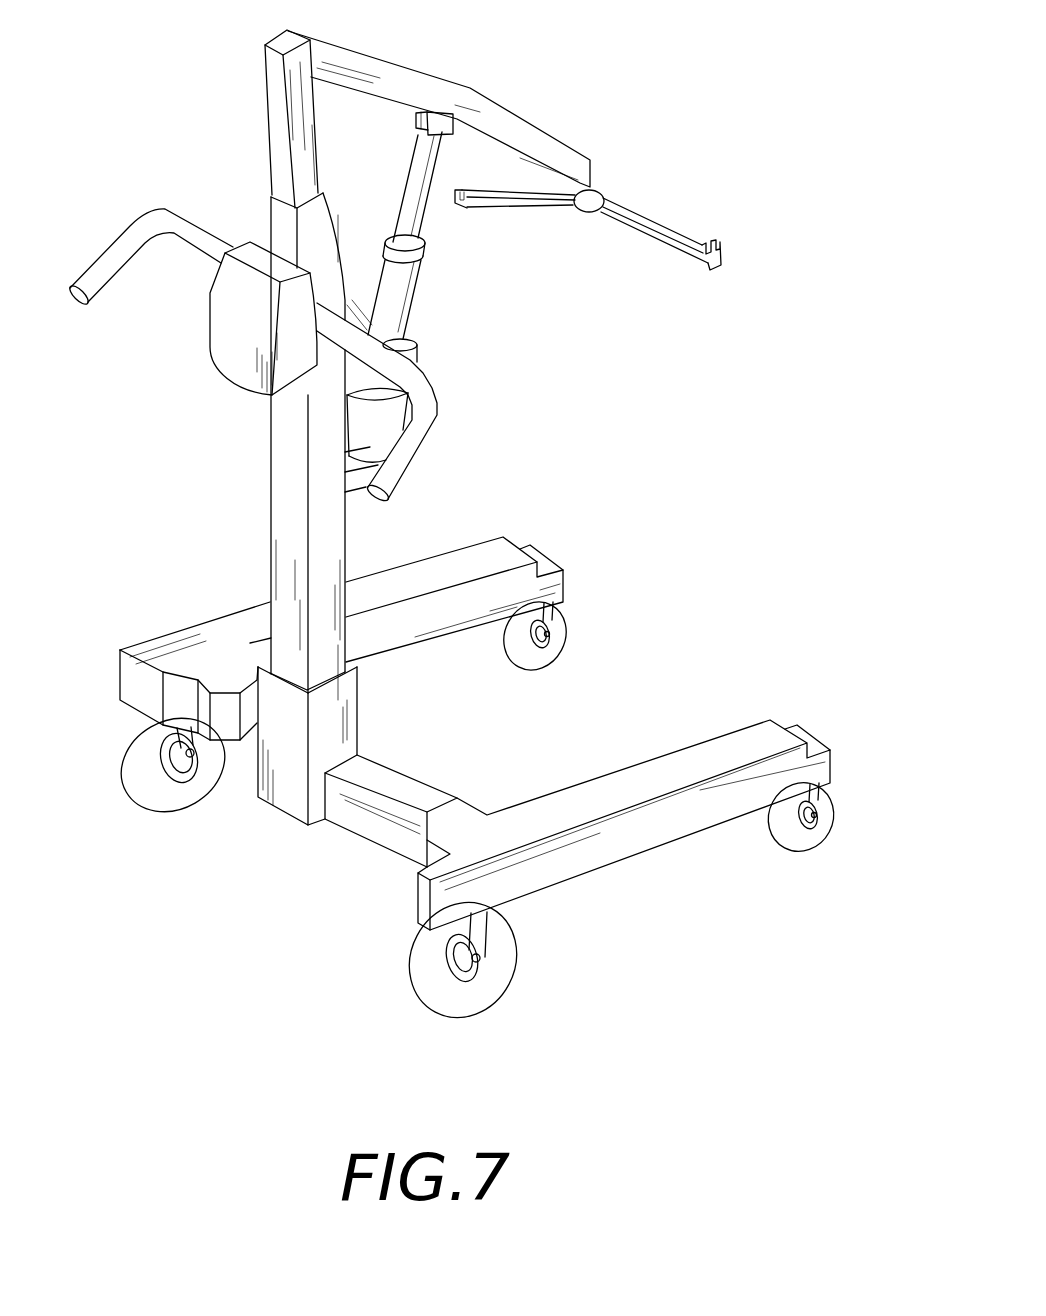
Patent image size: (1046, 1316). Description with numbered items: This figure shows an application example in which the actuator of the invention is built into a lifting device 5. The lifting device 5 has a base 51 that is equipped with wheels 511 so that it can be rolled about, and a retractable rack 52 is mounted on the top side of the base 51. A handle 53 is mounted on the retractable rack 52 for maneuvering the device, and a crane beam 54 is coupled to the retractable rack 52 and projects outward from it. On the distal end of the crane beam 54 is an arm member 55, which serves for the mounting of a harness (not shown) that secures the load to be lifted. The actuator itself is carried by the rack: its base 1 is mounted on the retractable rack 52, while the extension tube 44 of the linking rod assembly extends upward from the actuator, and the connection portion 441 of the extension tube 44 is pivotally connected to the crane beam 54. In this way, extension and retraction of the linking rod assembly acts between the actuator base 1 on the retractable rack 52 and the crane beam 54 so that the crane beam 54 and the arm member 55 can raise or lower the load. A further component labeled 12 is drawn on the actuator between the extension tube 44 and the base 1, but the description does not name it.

The base 1 is at (415, 345).
The lifting device 5 is at (455, 519).
The cylinder collar 12 is at (423, 253).
The extension tube 44 is at (438, 207).
The connection portion 441 is at (436, 112).
The base 51 is at (638, 837).
The wheels 511 is at (500, 962).
The retractable rack 52 is at (290, 452).
The handle 53 is at (120, 242).
The crane beam 54 is at (388, 63).
The arm member 55 is at (668, 228).